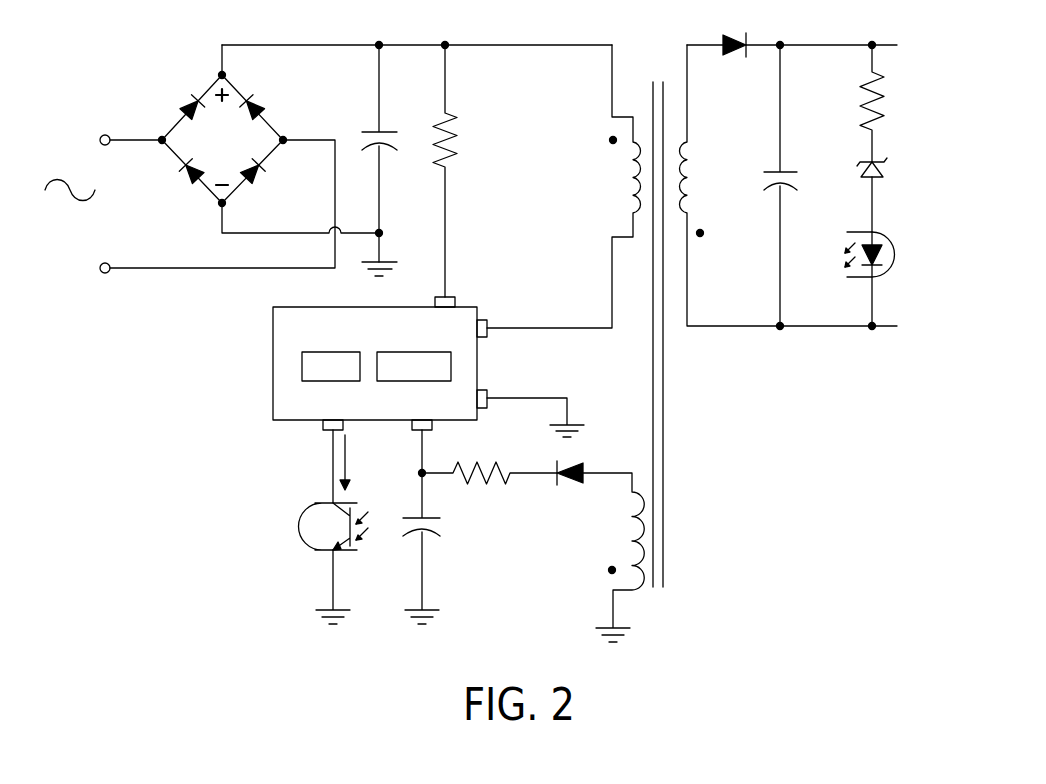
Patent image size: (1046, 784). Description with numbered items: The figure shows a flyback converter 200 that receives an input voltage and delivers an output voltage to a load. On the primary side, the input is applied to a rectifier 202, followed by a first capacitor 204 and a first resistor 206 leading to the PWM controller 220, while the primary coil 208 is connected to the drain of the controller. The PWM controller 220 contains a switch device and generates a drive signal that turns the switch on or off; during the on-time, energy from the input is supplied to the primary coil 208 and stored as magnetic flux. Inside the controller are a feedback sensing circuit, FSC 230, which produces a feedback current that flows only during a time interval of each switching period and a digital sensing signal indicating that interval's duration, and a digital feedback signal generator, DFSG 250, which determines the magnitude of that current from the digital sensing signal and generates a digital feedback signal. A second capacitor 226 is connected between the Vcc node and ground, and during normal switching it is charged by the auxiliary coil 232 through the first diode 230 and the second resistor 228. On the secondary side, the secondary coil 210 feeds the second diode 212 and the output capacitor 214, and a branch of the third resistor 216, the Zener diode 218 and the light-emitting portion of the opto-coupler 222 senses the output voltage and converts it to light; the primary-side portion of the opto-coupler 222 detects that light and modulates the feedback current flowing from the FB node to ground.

The flyback converter 200 is at (103, 36).
The rectifier 202 is at (252, 97).
The first capacitor 204 is at (362, 128).
The first resistor 206 is at (454, 115).
The primary coil 208 is at (630, 192).
The secondary coil 210 is at (690, 190).
The second diode 212 is at (740, 34).
The output capacitor 214 is at (790, 168).
The third resistor 216 is at (888, 92).
The Zener diode 218 is at (888, 172).
The PWM controller 220 is at (482, 360).
The opto-coupler 222 is at (900, 240).
The second capacitor 226 is at (432, 531).
The second resistor 228 is at (490, 486).
The first diode / feedback sensing circuit (FSC) 230 is at (326, 386).
The auxiliary coil 232 is at (630, 547).
The digital feedback signal generator (DFSG) 250 is at (420, 386).